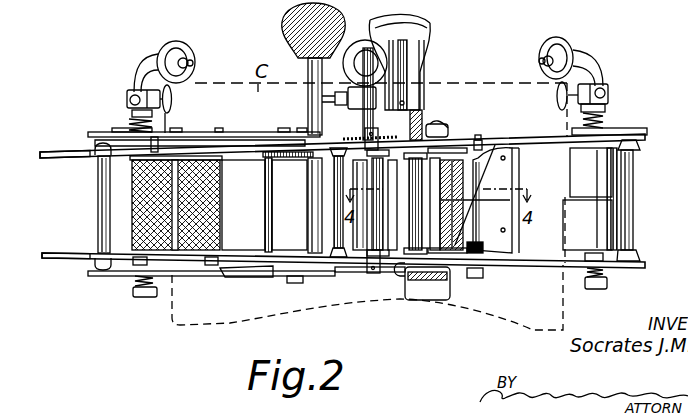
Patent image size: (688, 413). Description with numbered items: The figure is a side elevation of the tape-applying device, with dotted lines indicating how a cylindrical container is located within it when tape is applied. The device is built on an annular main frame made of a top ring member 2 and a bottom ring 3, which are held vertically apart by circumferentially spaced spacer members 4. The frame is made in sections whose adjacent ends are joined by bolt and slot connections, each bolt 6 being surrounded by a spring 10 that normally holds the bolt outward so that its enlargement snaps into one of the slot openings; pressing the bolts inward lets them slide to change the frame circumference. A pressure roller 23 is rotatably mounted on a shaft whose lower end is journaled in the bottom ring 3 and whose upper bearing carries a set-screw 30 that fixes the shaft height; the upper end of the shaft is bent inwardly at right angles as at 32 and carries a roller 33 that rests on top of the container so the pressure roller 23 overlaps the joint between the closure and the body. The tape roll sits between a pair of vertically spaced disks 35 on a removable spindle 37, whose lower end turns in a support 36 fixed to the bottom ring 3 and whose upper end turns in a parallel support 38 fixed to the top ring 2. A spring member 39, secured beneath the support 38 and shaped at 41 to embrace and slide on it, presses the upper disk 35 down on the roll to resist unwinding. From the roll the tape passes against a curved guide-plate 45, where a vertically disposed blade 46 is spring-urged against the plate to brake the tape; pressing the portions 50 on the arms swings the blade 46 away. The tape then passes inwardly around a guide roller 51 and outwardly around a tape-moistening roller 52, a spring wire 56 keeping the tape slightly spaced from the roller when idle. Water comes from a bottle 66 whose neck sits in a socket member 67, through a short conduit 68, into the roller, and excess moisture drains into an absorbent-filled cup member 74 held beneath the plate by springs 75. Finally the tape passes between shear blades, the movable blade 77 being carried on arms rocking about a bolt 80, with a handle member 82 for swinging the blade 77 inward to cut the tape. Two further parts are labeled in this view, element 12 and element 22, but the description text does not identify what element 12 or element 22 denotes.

The top ring member 2 is at (513, 136).
The bottom ring 3 is at (537, 267).
The spacer members 4 is at (98, 205).
The bolt 6 is at (132, 111).
The spring 10 is at (133, 123).
The shaft 12 is at (310, 103).
The knob 22 is at (283, 20).
The pressure roller 23 is at (603, 163).
The set-screw 30 is at (173, 99).
The inwardly bent upper end of shaft 32 is at (158, 58).
The roller 33 is at (183, 53).
The disks 35 is at (62, 150).
The support 36 is at (203, 272).
The shaft or spindle 37 is at (178, 200).
The support 38 is at (232, 135).
The spring member 39 is at (192, 133).
The embracing end of spring member 41 is at (135, 162).
The curved guide-plate 45 is at (420, 173).
The blade 46 is at (445, 233).
The portions 50 is at (352, 281).
The guide roller 51 is at (463, 185).
The tape-moistening roller 52 is at (475, 278).
The spring wire 56 is at (478, 143).
The bottle 66 is at (414, 45).
The socket member 67 is at (414, 105).
The short conduit 68 is at (447, 130).
The cup member 74 is at (430, 290).
The springs 75 is at (398, 277).
The blade 77 is at (515, 153).
The bolt 80 is at (477, 232).
The handle member 82 is at (487, 7).